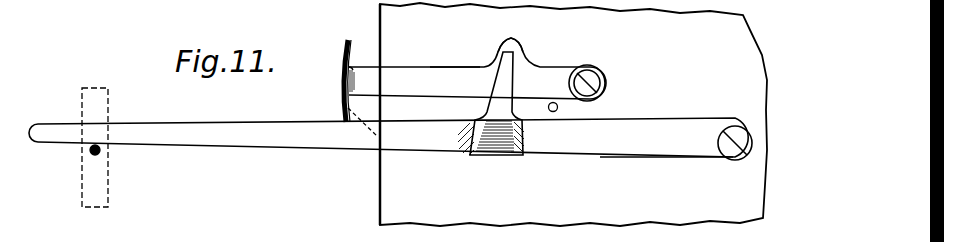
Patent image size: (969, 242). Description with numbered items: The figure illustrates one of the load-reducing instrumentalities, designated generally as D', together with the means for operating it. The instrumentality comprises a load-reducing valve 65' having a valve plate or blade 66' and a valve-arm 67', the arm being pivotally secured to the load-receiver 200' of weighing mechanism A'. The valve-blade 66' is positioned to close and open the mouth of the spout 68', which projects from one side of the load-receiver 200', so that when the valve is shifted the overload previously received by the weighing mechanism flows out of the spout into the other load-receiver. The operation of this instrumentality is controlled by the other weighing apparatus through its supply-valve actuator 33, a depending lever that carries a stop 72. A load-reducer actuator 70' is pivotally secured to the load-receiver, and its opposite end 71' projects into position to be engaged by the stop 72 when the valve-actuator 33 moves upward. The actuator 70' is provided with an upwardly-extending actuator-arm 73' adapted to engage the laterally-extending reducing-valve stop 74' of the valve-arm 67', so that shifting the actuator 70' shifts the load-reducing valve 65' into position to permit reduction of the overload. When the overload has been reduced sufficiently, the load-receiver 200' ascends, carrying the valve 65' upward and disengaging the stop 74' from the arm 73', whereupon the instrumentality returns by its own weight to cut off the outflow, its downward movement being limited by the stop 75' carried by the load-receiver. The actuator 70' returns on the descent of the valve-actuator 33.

The end of load-reducer actuator 71' is at (386, 149).
The stop 72 is at (100, 151).
The valve-actuator 33 is at (108, 178).
The load-reducing valve 65' is at (327, 82).
The spout 68' is at (354, 65).
The valve plate or blade 66' is at (390, 45).
The load-reducing instrumentality D' is at (477, 68).
The valve-arm 67' is at (460, 51).
The reducing-valve stop 74' is at (536, 37).
The actuator-arm 73' is at (527, 99).
The stop 75' is at (596, 108).
The load-reducer actuator 70' is at (644, 163).
The load-receiver 200' is at (545, 114).